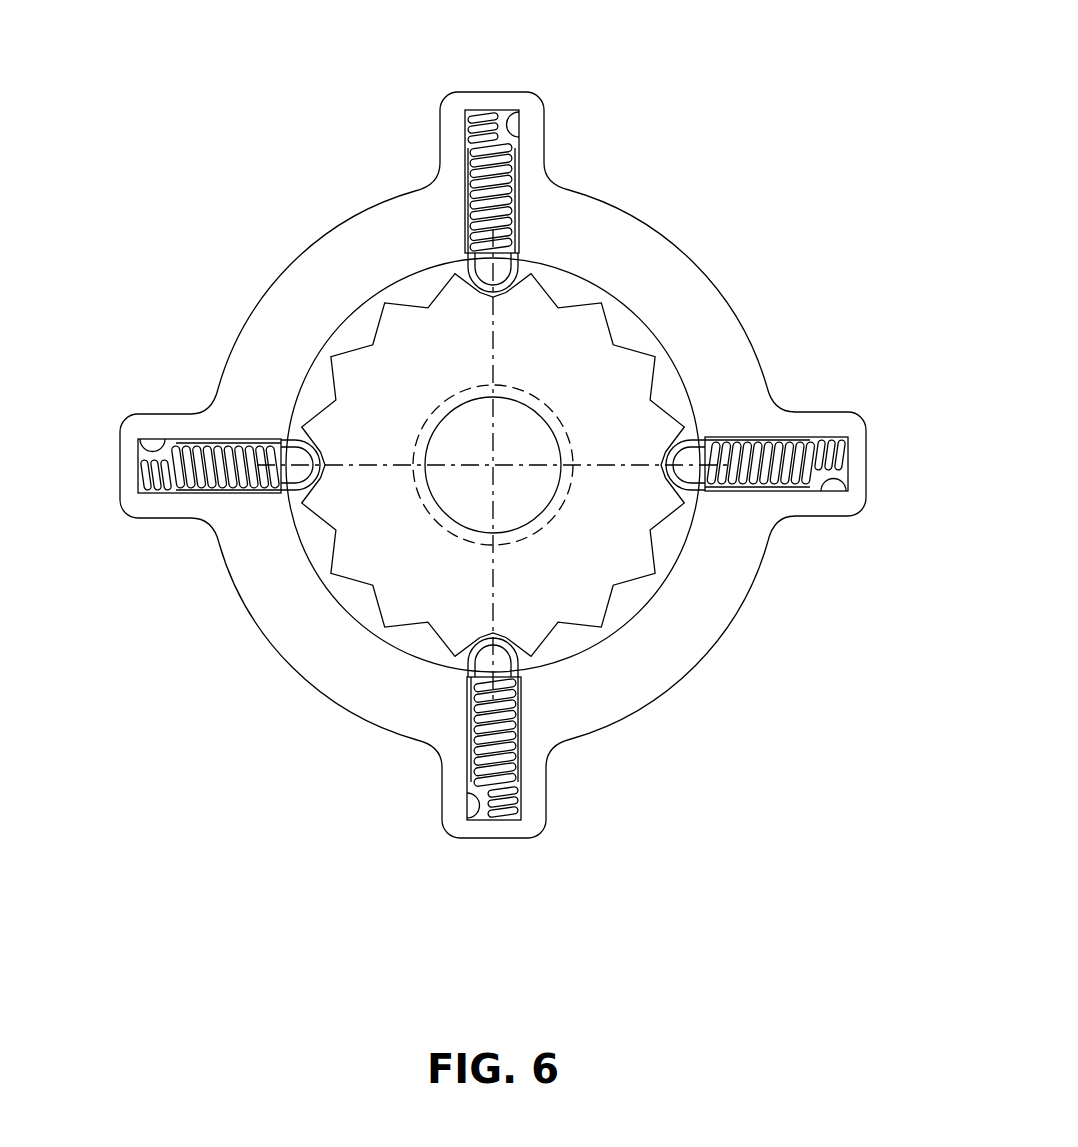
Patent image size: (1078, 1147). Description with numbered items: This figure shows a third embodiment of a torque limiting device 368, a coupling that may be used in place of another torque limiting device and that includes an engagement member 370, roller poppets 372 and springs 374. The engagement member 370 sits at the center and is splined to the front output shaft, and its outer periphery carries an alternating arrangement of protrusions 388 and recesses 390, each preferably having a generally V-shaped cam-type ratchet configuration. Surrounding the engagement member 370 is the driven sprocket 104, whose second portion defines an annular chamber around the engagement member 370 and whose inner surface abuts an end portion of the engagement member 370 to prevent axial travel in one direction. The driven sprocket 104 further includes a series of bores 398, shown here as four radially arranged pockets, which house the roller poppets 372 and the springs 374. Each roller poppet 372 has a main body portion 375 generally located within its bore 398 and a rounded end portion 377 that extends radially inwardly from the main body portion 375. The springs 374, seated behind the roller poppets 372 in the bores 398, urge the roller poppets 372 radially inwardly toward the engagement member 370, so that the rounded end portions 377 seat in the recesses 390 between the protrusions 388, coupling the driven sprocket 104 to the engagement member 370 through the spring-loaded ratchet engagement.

The torque limiting device 368 is at (230, 215).
The driven sprocket 104 is at (295, 635).
The recesses 390 is at (427, 307).
The protrusions 388 is at (392, 322).
The engagement member 370 is at (638, 573).
The rounded end portions 377 is at (515, 292).
The roller poppets 372 is at (519, 262).
The main body portions 375 is at (505, 175).
The springs 374 is at (480, 140).
The bores 398 is at (503, 112).